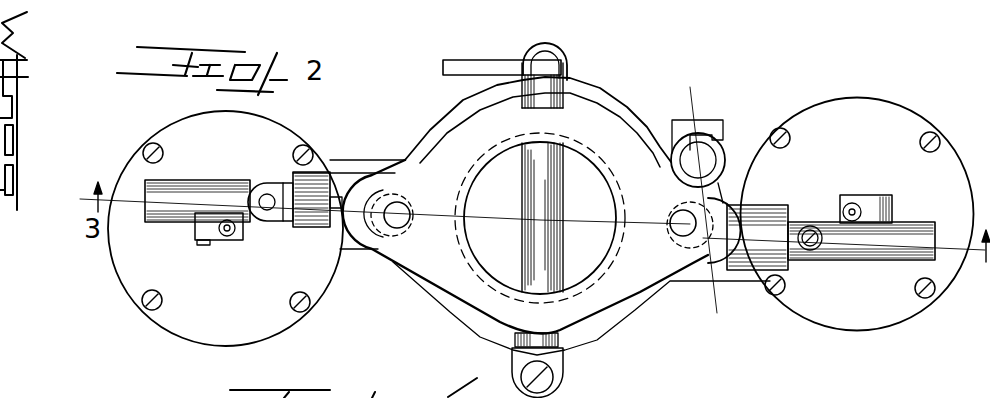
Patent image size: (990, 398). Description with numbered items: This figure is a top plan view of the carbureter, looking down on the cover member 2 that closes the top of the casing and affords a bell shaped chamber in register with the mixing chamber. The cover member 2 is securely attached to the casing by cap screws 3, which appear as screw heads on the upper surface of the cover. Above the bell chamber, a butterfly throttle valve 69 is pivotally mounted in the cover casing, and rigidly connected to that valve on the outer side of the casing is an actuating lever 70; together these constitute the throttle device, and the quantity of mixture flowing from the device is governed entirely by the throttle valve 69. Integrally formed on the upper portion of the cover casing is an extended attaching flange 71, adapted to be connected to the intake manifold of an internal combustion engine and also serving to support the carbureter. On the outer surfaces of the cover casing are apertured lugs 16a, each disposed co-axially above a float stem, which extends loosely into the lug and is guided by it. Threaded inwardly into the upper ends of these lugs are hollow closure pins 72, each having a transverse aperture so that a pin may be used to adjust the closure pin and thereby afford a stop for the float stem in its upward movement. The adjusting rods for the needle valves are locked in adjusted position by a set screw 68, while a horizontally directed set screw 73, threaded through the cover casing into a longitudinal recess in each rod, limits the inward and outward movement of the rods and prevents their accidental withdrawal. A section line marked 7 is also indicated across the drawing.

The cover member 2 is at (270, 138).
The cap screws 3 is at (912, 289).
The section line 7 is at (680, 102).
The apertured lugs 16a is at (193, 233).
The set screw 68 is at (813, 243).
The butterfly throttle valve 69 is at (593, 238).
The actuating lever 70 is at (487, 70).
The attaching flange 71 is at (428, 258).
The hollow closure pins 72 is at (847, 212).
The set screw 73 is at (250, 220).